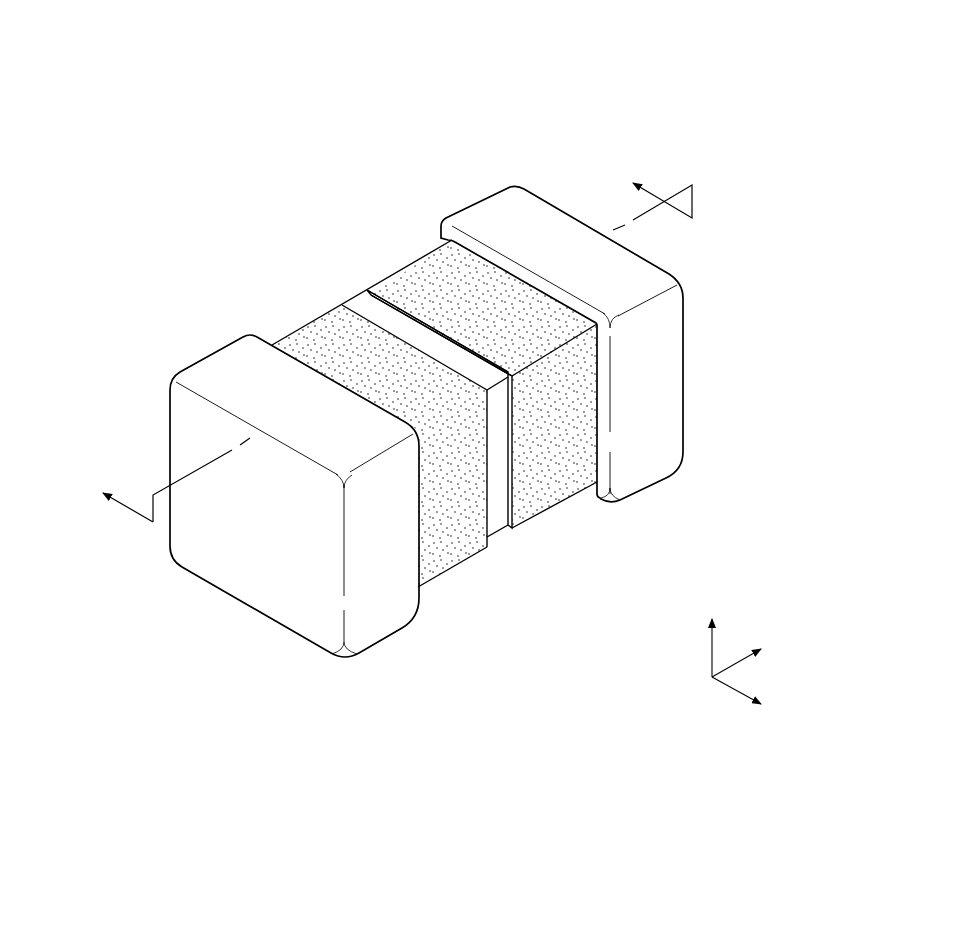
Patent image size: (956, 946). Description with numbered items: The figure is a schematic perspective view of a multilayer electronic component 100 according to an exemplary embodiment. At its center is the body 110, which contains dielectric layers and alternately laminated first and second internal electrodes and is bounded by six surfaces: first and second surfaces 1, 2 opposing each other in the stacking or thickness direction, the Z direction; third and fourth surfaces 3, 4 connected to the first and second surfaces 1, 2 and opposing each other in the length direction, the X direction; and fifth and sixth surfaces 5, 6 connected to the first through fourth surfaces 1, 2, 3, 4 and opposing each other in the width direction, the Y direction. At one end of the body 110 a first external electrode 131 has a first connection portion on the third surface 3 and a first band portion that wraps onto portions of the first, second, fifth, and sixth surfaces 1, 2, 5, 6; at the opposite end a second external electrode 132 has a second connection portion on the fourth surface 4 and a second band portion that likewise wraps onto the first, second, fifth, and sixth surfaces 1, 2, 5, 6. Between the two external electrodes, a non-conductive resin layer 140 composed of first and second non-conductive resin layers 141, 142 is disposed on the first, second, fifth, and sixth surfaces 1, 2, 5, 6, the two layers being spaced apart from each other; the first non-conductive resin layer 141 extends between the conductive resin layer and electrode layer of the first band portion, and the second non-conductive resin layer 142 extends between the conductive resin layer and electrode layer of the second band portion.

The multilayer electronic component 100 is at (263, 40).
The body 110 is at (363, 300).
The first external electrode 131 is at (213, 363).
The second external electrode 132 is at (498, 207).
The non-conductive resin layer 140 is at (167, 137).
The first non-conductive resin layer 141 is at (313, 328).
The second non-conductive resin layer 142 is at (433, 268).
The first surface 1 is at (442, 546).
The second surface 2 is at (493, 296).
The third surface 3 is at (255, 538).
The fourth surface 4 is at (643, 330).
The fifth surface 5 is at (502, 483).
The sixth surface 6 is at (398, 297).